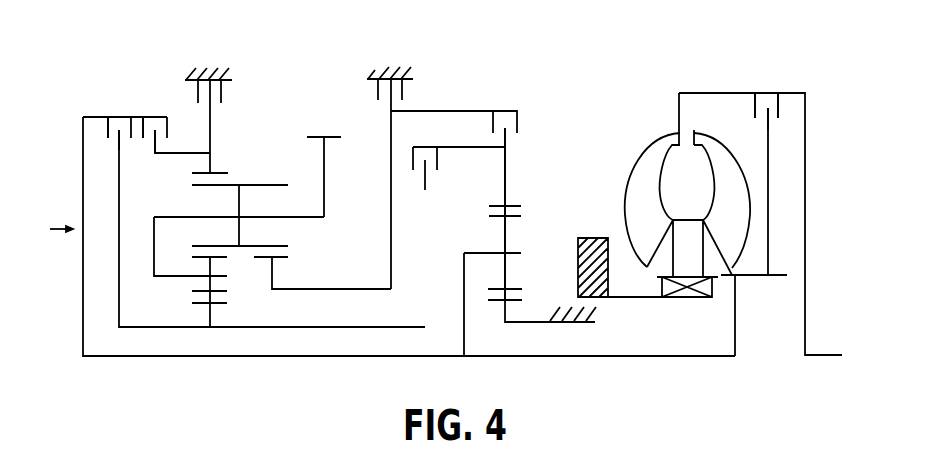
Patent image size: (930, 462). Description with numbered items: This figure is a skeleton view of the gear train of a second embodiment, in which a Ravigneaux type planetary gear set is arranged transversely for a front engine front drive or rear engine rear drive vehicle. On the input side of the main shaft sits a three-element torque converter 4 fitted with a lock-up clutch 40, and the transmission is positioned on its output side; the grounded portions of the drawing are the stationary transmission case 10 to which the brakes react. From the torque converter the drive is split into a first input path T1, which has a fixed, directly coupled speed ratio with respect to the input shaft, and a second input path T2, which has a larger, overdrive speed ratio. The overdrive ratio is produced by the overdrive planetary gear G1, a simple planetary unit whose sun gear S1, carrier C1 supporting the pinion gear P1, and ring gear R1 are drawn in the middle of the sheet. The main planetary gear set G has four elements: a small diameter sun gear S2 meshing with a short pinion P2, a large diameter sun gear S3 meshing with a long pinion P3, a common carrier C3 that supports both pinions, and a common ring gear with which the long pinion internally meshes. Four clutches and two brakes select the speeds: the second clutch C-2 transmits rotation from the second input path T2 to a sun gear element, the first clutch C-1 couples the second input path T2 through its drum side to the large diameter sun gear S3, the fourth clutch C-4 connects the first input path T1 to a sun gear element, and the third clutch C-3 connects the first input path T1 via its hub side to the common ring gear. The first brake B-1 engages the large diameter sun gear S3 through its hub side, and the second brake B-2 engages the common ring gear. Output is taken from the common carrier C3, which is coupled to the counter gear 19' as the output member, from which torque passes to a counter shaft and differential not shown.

The torque converter 4 is at (713, 88).
The lock-up clutch 40 is at (753, 104).
The transmission case 10 is at (185, 74).
The counter gear 19' is at (324, 151).
The planetary gear set G is at (250, 112).
The overdrive planetary gear G1 is at (540, 213).
The first input path T1 is at (48, 230).
The second input path T2 is at (506, 176).
The first brake B-1 is at (390, 163).
The second brake B-2 is at (208, 105).
The first clutch C-1 is at (455, 118).
The second clutch C-2 is at (457, 157).
The third clutch C-3 is at (158, 122).
The fourth clutch C-4 is at (106, 120).
The ring gear R1 is at (490, 200).
The pinion gear P1 is at (510, 216).
The sun gear S1 is at (512, 296).
The carrier C1 is at (476, 252).
The short pinion P2 is at (276, 247).
The small diameter sun gear S2 is at (278, 260).
The common carrier C3 is at (163, 216).
The long pinion P3 is at (220, 288).
The large diameter sun gear S3 is at (193, 303).